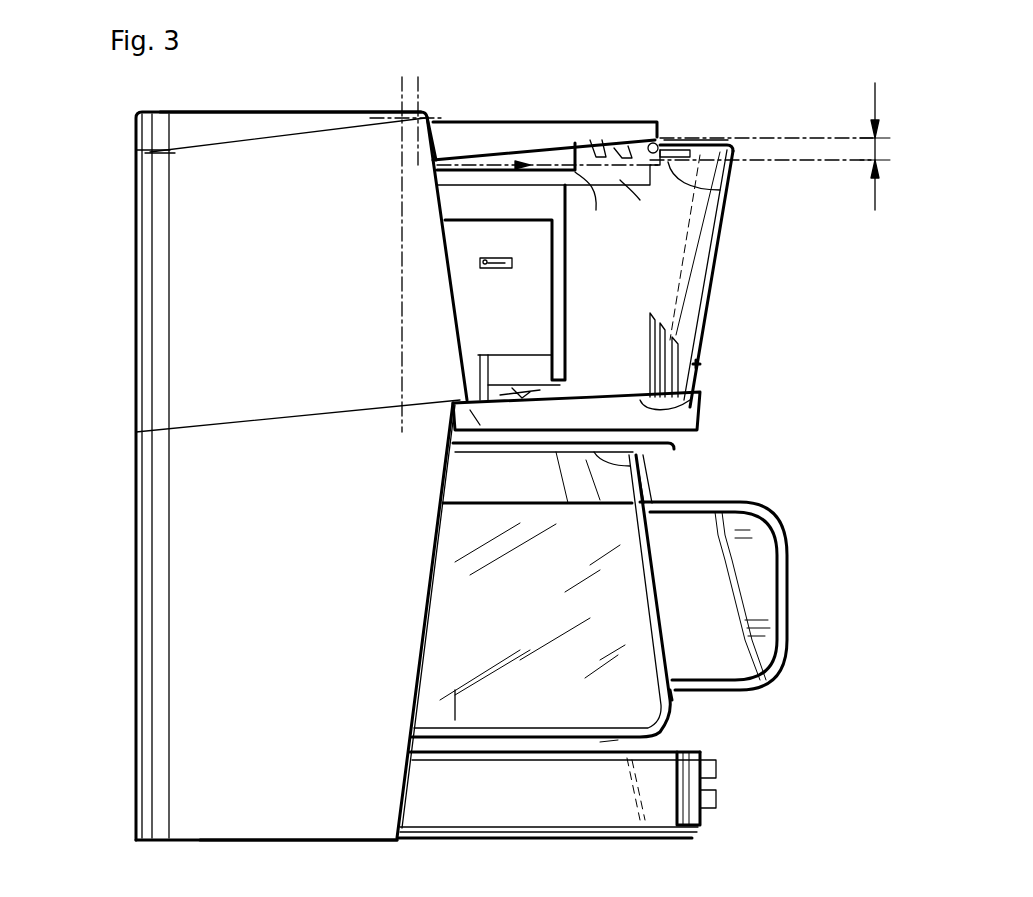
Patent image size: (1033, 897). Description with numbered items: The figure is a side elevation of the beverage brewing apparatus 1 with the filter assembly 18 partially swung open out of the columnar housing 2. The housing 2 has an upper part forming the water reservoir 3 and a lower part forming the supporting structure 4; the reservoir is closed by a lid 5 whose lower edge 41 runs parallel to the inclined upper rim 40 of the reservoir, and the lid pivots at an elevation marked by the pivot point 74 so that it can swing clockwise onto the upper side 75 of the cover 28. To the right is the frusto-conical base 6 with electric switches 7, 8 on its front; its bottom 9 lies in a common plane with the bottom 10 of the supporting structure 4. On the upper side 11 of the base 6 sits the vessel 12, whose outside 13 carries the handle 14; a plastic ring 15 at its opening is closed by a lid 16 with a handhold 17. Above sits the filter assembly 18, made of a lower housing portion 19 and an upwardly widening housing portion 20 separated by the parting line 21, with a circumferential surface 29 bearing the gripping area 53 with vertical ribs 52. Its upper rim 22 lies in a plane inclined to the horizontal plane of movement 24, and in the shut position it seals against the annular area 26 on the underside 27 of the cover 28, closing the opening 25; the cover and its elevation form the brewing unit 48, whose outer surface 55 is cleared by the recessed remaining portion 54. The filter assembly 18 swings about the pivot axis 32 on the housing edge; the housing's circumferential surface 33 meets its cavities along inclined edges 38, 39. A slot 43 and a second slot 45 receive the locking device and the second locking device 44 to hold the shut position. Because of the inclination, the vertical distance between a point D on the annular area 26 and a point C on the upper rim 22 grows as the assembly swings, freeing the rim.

The beverage brewing apparatus 1 is at (122, 470).
The columnar housing 2 is at (134, 575).
The water reservoir 3 is at (148, 310).
The supporting structure 4 is at (154, 660).
The lid 5 is at (230, 112).
The base 6 is at (603, 812).
The electric switch 7 is at (720, 771).
The electric switch 8 is at (720, 800).
The bottom of the base 9 is at (538, 840).
The bottom of the supporting structure 10 is at (275, 842).
The upper side of the base 11 is at (690, 754).
The vessel 12 is at (600, 553).
The outside of the vessel 13 is at (680, 696).
The handle 14 is at (768, 578).
The plastic ring 15 is at (615, 483).
The lid 16 is at (626, 460).
The handhold 17 is at (676, 446).
The filter assembly 18 is at (732, 238).
The lower housing portion 19 is at (695, 408).
The housing portion 20 is at (705, 278).
The parting line 21 is at (680, 390).
The upper rim 22 is at (740, 148).
The plane of movement 24 is at (815, 165).
The opening 25 is at (708, 132).
The annular area 26 is at (660, 150).
The underside of the cover 27 is at (600, 148).
The cover 28 is at (537, 128).
The circumferential surface of the filter assembly 29 is at (710, 310).
The pivot axis 32 is at (398, 312).
The circumferential surface of the housing 33 is at (150, 740).
The inclined edge 38 is at (436, 145).
The inclined edge 39 is at (445, 622).
The upper rim of the water reservoir 40 is at (160, 150).
The lower edge of the lid 41 is at (182, 152).
The slot 43 is at (500, 263).
The second locking device 44 is at (622, 148).
The second slot 45 is at (695, 147).
The brewing unit 48 is at (560, 150).
The ribs 52 is at (680, 350).
The gripping area 53 is at (700, 370).
The remaining portion 54 is at (620, 185).
The outer surface of the brewing unit 55 is at (580, 172).
The pivot point 74 is at (412, 110).
The upper side of the cover 75 is at (496, 120).
The point C is at (720, 190).
The point D is at (654, 147).